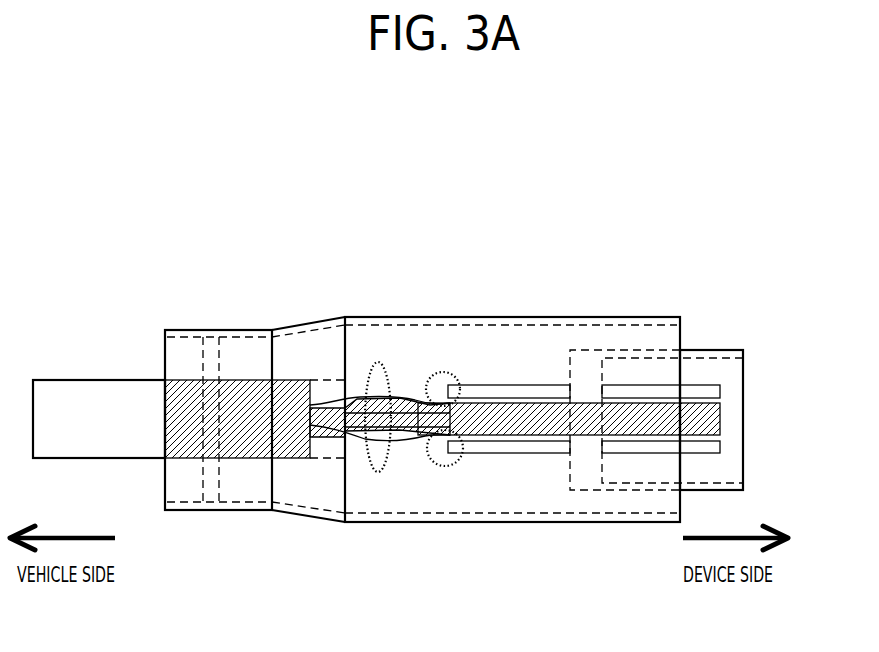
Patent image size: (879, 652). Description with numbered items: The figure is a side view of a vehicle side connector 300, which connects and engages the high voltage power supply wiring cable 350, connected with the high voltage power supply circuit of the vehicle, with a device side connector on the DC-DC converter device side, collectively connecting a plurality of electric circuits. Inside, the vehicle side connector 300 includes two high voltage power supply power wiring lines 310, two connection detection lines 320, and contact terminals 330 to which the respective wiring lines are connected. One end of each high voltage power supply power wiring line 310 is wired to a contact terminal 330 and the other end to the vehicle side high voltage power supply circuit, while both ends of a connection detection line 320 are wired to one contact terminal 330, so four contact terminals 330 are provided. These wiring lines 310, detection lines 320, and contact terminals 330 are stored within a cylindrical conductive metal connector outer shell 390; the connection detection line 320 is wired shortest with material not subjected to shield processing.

The vehicle side connector 300 is at (190, 234).
The high voltage power supply power wiring line 310 is at (377, 362).
The connection detection line 320 is at (438, 372).
The contact terminal 330 is at (712, 390).
The high voltage power supply wiring cable 350 is at (60, 405).
The connector outer shell 390 is at (563, 323).